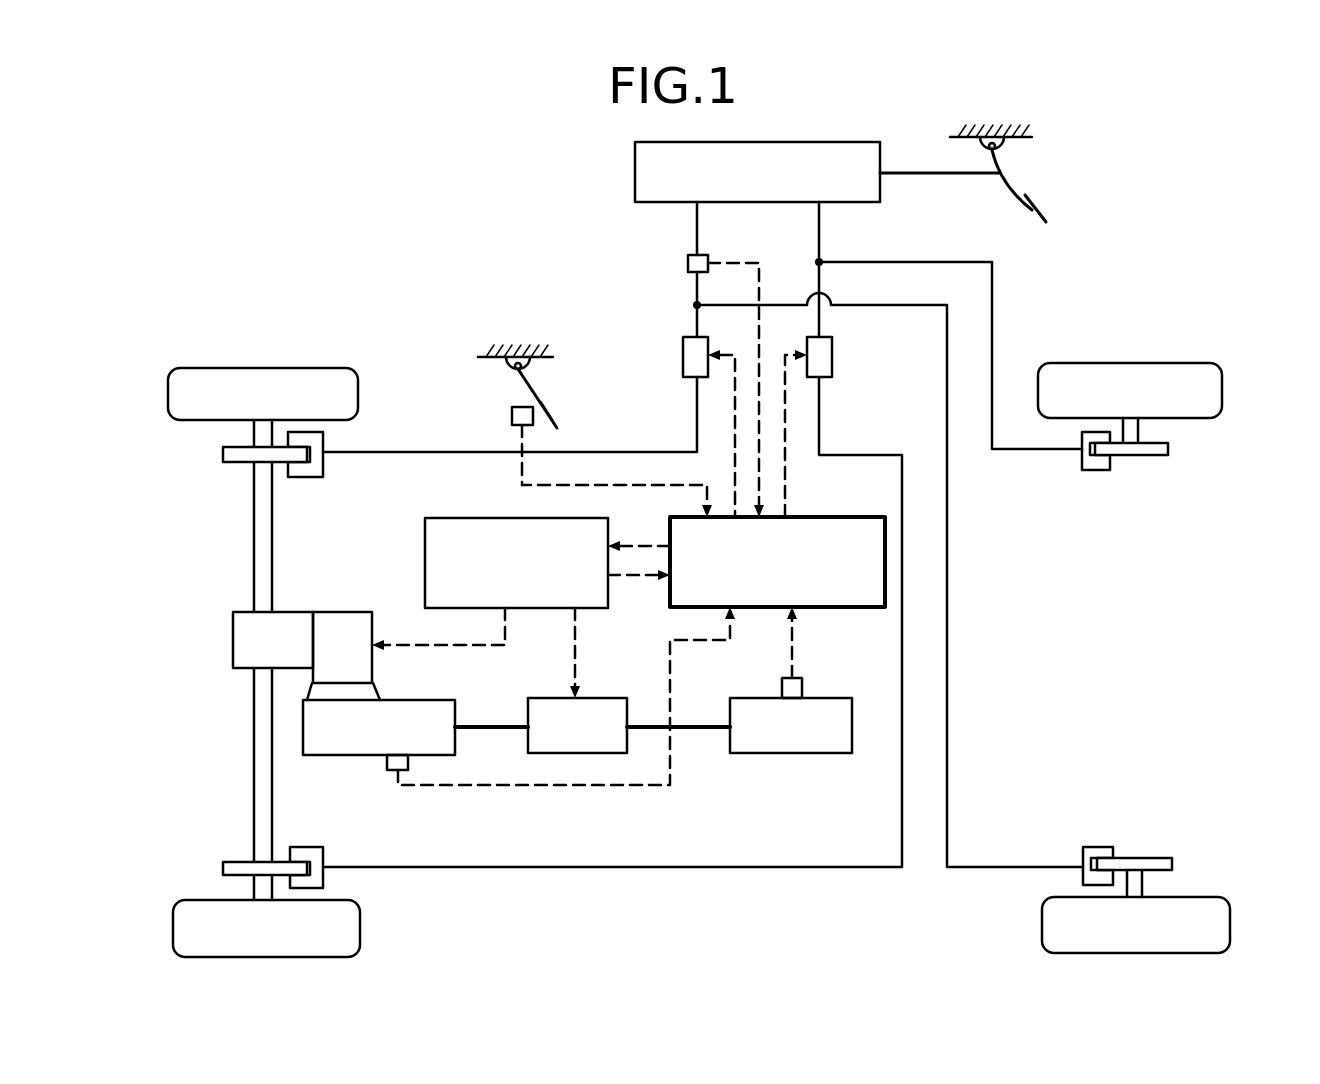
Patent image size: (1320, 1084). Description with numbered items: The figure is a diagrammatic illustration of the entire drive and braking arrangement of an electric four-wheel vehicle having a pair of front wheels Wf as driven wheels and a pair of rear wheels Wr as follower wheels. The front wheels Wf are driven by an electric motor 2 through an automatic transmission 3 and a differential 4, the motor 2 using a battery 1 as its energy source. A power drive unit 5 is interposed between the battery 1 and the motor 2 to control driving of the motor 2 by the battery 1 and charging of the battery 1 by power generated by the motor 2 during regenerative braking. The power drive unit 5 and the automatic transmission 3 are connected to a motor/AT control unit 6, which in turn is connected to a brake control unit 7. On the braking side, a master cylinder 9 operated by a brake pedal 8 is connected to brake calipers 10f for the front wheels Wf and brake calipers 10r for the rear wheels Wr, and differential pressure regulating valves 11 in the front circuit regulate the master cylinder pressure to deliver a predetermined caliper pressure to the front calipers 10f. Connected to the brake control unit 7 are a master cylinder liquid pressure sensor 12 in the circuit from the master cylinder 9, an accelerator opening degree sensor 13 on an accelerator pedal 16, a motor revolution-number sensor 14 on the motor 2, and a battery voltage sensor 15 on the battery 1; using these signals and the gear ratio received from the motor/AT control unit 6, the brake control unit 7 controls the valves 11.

The battery 1 is at (832, 698).
The electric motor 2 is at (433, 700).
The automatic transmission 3 is at (340, 612).
The differential 4 is at (293, 612).
The power drive unit 5 is at (615, 672).
The motor/AT control unit 6 is at (482, 518).
The brake control unit 7 is at (823, 515).
The brake pedal 8 is at (1036, 206).
The master cylinder 9 is at (866, 142).
The brake calipers for the front wheels 10f is at (318, 478).
The brake calipers for the rear wheels 10r is at (1097, 470).
The differential pressure regulating valves 11 is at (683, 357).
The master cylinder liquid pressure sensor 12 is at (688, 263).
The accelerator opening degree sensor 13 is at (512, 417).
The motor revolution-number sensor 14 is at (387, 762).
The battery voltage sensor 15 is at (782, 688).
The accelerator pedal 16 is at (560, 428).
The front wheels Wf is at (328, 370).
The rear wheels Wr is at (1182, 378).